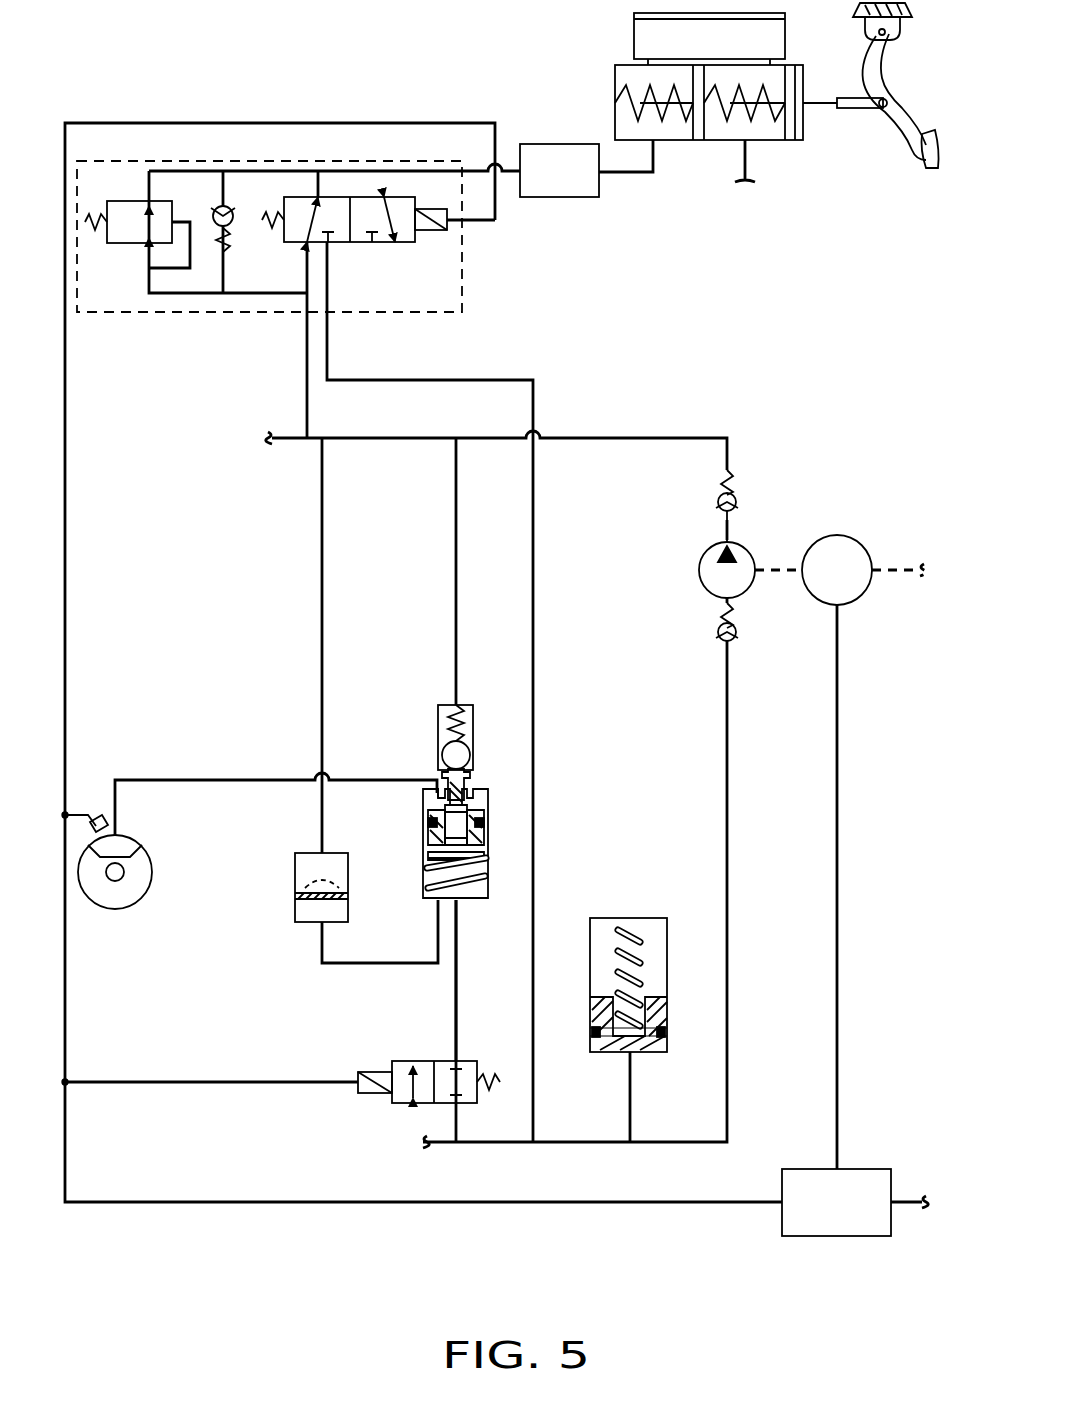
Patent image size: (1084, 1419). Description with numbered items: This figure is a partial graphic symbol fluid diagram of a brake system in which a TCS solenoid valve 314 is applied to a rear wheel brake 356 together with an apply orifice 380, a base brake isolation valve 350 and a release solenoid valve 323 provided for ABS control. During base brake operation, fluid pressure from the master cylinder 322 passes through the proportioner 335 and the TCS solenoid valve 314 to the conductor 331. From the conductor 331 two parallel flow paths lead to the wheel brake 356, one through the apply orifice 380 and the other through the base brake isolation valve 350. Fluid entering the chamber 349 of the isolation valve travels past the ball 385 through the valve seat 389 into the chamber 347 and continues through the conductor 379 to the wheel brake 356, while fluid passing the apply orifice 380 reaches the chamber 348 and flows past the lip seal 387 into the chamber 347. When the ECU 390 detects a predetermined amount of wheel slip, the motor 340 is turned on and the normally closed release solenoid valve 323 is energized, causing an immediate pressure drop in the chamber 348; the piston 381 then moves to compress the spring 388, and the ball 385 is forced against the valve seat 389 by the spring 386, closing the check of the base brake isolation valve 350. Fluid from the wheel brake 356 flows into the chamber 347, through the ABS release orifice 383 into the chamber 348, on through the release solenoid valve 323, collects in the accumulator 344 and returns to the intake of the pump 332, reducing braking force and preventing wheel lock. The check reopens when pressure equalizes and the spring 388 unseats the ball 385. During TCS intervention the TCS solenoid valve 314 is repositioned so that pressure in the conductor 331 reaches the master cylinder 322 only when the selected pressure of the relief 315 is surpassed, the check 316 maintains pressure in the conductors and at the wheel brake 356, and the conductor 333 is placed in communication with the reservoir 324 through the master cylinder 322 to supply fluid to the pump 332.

The TCS solenoid valve 314 is at (268, 160).
The relief 315 is at (128, 200).
The check 316 is at (220, 214).
The master cylinder 322 is at (620, 80).
The release solenoid valve 323 is at (400, 1106).
The reservoir 324 is at (644, 38).
The conductor 331 is at (307, 380).
The pump 332 is at (705, 560).
The conductor 333 is at (328, 343).
The proportioner 335 is at (550, 143).
The motor 340 is at (835, 540).
The accumulator 344 is at (650, 1057).
The chamber 347 is at (425, 790).
The chamber 348 is at (487, 888).
The chamber 349 is at (472, 718).
The base brake isolation valve 350 is at (422, 777).
The rear wheel brake 356 is at (127, 838).
The conductor 379 is at (253, 778).
The apply orifice 380 is at (290, 880).
The piston 381 is at (488, 836).
The ABS release orifice 383 is at (457, 858).
The ball 385 is at (462, 752).
The spring 386 is at (445, 720).
The lip seal 387 is at (488, 822).
The spring 388 is at (468, 880).
The valve seat 389 is at (472, 772).
The ECU 390 is at (868, 1178).